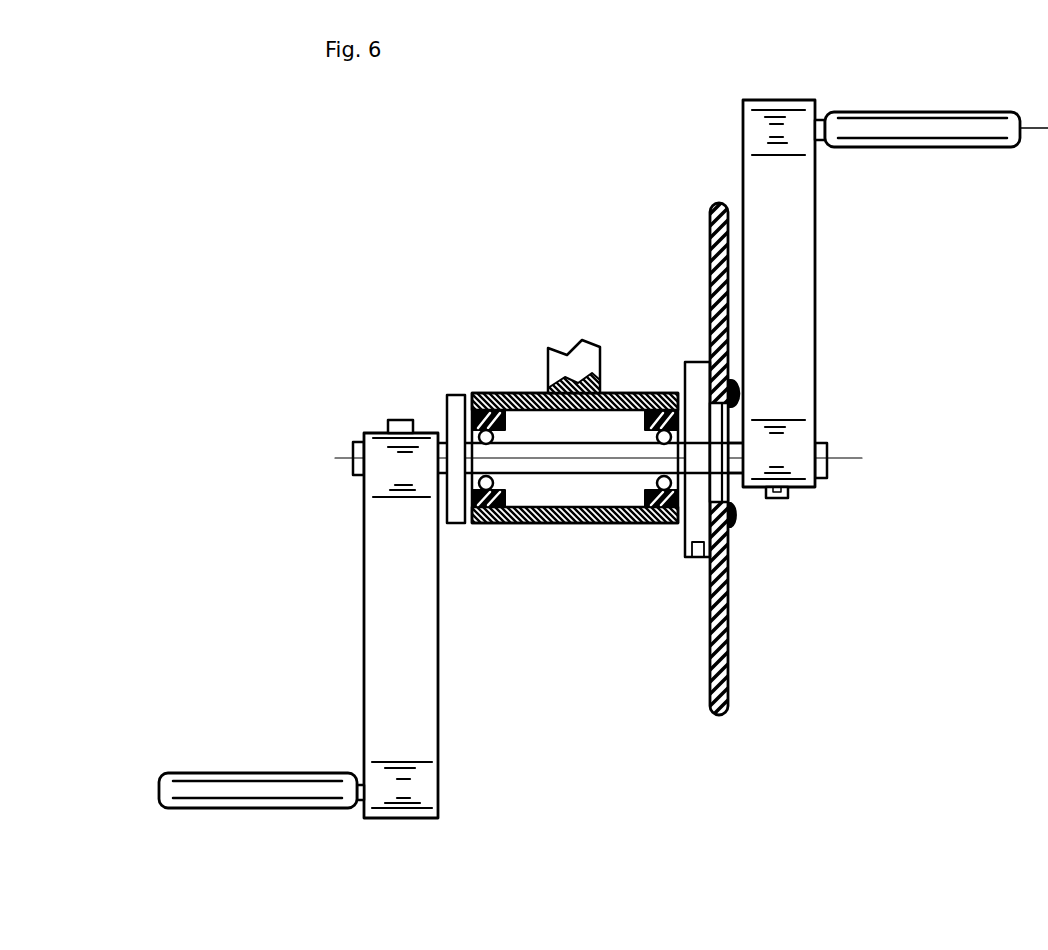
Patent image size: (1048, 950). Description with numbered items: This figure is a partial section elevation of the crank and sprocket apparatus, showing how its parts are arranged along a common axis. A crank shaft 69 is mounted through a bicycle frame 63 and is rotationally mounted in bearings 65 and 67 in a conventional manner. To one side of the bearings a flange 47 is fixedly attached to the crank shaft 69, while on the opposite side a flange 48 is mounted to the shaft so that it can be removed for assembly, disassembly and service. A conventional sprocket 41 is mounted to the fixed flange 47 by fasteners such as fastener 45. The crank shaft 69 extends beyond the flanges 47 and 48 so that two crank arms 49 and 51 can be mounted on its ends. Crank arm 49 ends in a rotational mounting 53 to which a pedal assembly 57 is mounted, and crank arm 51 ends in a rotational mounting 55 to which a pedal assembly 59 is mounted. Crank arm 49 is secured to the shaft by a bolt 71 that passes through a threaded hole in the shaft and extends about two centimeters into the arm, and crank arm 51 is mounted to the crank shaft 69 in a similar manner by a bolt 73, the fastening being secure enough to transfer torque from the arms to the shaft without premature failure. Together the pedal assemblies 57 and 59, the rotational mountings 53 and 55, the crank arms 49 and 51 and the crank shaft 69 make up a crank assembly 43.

The sprocket 41 is at (710, 270).
The crank assembly 43 is at (742, 170).
The fastener 45 is at (743, 397).
The flange 47 is at (695, 557).
The flange 48 is at (455, 395).
The crank arm 49 is at (820, 268).
The crank arm 51 is at (439, 690).
The rotational mounting 53 is at (818, 118).
The rotational mounting 55 is at (362, 800).
The pedal assembly 57 is at (913, 128).
The pedal assembly 59 is at (247, 790).
The bicycle frame 63 is at (549, 442).
The bearing 65 is at (473, 393).
The bearing 67 is at (662, 523).
The crank shaft 69 is at (575, 465).
The bolt 71 is at (778, 500).
The bolt 73 is at (403, 420).